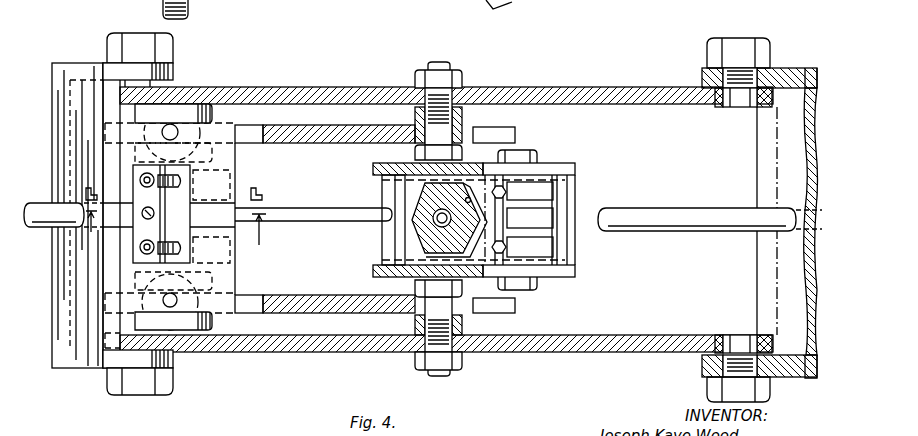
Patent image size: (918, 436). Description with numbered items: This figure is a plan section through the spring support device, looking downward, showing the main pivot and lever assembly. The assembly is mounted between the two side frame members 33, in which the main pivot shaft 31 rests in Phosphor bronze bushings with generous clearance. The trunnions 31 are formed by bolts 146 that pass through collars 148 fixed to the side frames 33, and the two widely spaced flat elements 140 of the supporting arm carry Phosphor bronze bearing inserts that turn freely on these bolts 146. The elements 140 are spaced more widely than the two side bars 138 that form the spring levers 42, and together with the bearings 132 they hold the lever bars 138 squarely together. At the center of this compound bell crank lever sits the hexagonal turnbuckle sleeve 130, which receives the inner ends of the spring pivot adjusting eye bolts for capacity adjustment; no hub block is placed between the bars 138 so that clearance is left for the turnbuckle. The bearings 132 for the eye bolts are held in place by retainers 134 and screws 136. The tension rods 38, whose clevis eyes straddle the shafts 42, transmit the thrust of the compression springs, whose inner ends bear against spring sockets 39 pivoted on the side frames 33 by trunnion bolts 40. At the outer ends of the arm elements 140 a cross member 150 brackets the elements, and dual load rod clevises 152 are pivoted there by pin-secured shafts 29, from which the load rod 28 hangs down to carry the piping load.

The load rod 28 is at (190, 7).
The pivot 29 is at (184, 100).
The main pivot shaft 31 is at (441, 62).
The side frame members 33 is at (299, 88).
The tension rods 38 is at (38, 203).
The spring sockets 39 is at (85, 371).
The bolts 40 is at (107, 45).
The spring levers 42 is at (515, 152).
The hexagonal turnbuckle sleeve 130 is at (455, 192).
The bearings 132 is at (407, 244).
The retainers 134 is at (503, 218).
The screws 136 is at (507, 192).
The side bars 138 is at (374, 170).
The flat elements 140 is at (325, 123).
The bolts 146 is at (415, 150).
The collars 148 is at (457, 118).
The cross member 150 is at (222, 272).
The load rod clevises 152 is at (213, 116).